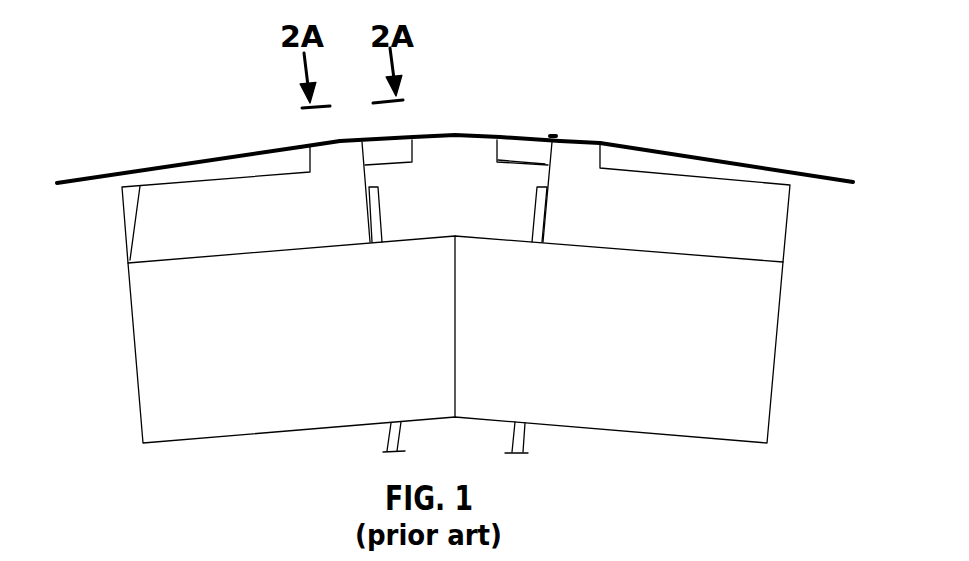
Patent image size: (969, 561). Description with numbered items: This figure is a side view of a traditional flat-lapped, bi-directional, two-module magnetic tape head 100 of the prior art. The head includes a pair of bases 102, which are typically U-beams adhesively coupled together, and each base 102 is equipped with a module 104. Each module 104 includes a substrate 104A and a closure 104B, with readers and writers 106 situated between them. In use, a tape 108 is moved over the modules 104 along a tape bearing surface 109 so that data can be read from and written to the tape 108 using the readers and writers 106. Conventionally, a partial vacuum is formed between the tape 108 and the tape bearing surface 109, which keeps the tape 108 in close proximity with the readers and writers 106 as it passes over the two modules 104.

The magnetic tape head 100 is at (234, 108).
The base 102 is at (133, 330).
The module 104 is at (122, 233).
The substrate 104A is at (185, 208).
The closure 104B is at (497, 153).
The readers and writers 106 is at (553, 128).
The tape 108 is at (785, 172).
The tape bearing surface 109 is at (322, 134).